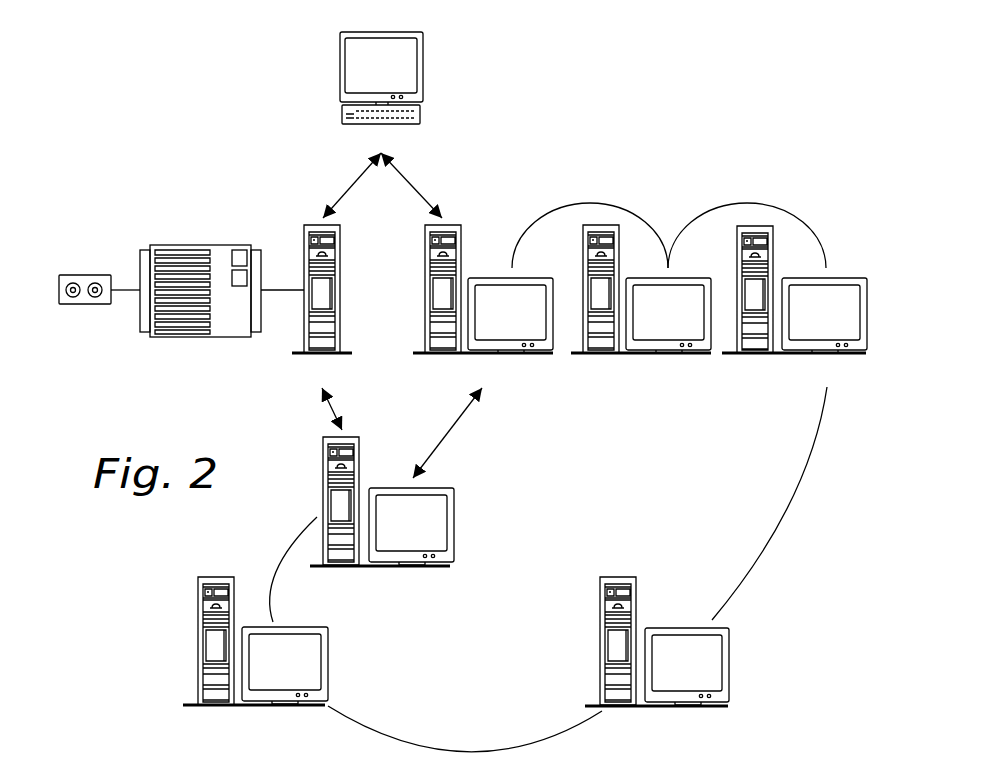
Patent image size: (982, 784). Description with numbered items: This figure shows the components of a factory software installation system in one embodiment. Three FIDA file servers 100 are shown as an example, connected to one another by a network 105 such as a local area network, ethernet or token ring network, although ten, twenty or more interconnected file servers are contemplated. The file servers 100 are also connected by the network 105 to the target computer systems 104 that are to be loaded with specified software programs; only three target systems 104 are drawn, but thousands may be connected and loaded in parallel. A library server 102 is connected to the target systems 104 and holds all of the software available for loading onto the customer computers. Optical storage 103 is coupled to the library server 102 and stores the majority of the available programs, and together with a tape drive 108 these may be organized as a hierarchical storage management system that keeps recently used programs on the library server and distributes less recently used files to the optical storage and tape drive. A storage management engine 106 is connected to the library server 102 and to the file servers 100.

The file server 100 is at (640, 305).
The library server 102 is at (340, 290).
The optical storage 103 is at (202, 243).
The target computer system 104 is at (527, 571).
The network 105 is at (748, 203).
The storage management engine 106 is at (397, 73).
The tape drive 108 is at (84, 273).